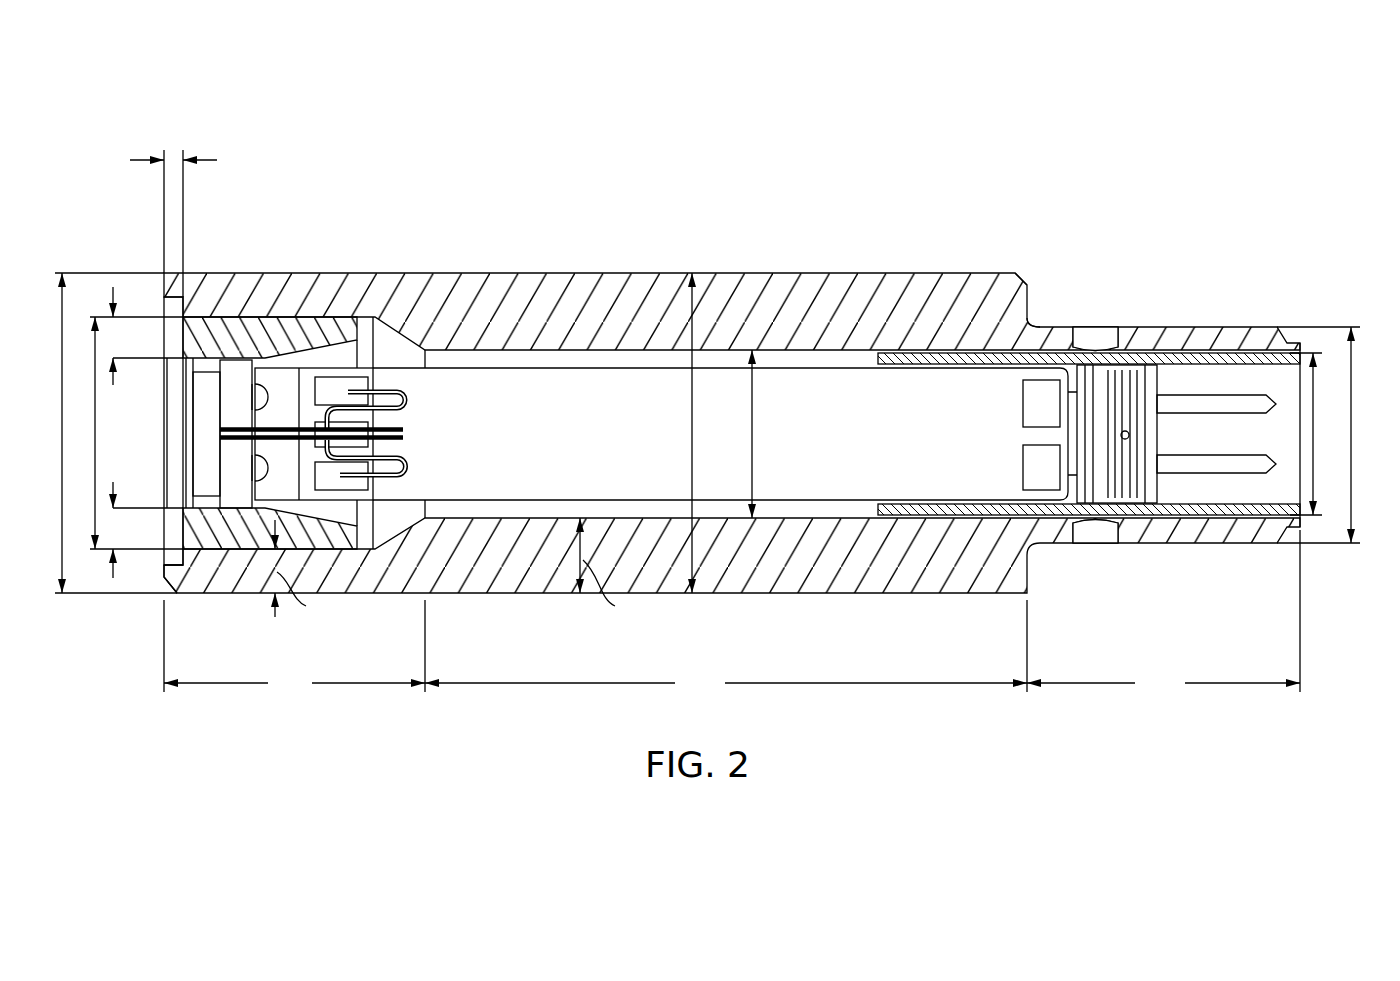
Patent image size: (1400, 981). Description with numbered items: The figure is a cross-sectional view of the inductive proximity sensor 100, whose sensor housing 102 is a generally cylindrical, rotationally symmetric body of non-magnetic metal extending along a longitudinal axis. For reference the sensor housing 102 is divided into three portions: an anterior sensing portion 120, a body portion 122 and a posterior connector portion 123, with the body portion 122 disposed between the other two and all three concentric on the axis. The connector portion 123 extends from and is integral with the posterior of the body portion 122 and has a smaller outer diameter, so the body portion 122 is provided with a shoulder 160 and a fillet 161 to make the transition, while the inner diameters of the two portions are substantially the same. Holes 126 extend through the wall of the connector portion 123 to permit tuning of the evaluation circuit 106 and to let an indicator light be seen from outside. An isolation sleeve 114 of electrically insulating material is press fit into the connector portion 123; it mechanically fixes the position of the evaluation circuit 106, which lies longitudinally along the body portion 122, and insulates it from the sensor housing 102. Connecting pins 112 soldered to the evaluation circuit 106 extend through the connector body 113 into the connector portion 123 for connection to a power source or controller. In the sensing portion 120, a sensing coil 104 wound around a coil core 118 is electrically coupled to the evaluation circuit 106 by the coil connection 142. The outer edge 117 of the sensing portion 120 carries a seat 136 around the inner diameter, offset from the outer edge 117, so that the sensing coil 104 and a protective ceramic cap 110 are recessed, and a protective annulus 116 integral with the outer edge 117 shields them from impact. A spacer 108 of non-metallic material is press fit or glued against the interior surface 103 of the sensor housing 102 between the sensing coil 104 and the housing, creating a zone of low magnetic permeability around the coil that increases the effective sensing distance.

The inductive proximity sensor 100 is at (748, 216).
The sensor housing 102 is at (497, 273).
The interior surface 103 is at (363, 318).
The sensing coil 104 is at (200, 390).
The evaluation circuit 106 is at (840, 362).
The spacer 108 is at (228, 316).
The ceramic cap 110 is at (178, 458).
The connecting pins 112 is at (1222, 402).
The connector body 113 is at (1130, 436).
The isolation sleeve 114 is at (1128, 358).
The protective annulus 116 is at (173, 205).
The outer edge 117 is at (158, 580).
The coil core 118 is at (232, 474).
The sensing portion 120 is at (294, 647).
The body portion 122 is at (726, 647).
The connector portion 123 is at (1163, 612).
The holes 126 is at (1095, 346).
The seat 136 is at (190, 567).
The coil connection 142 is at (408, 398).
The shoulder 160 is at (1025, 298).
The fillet 161 is at (1033, 328).